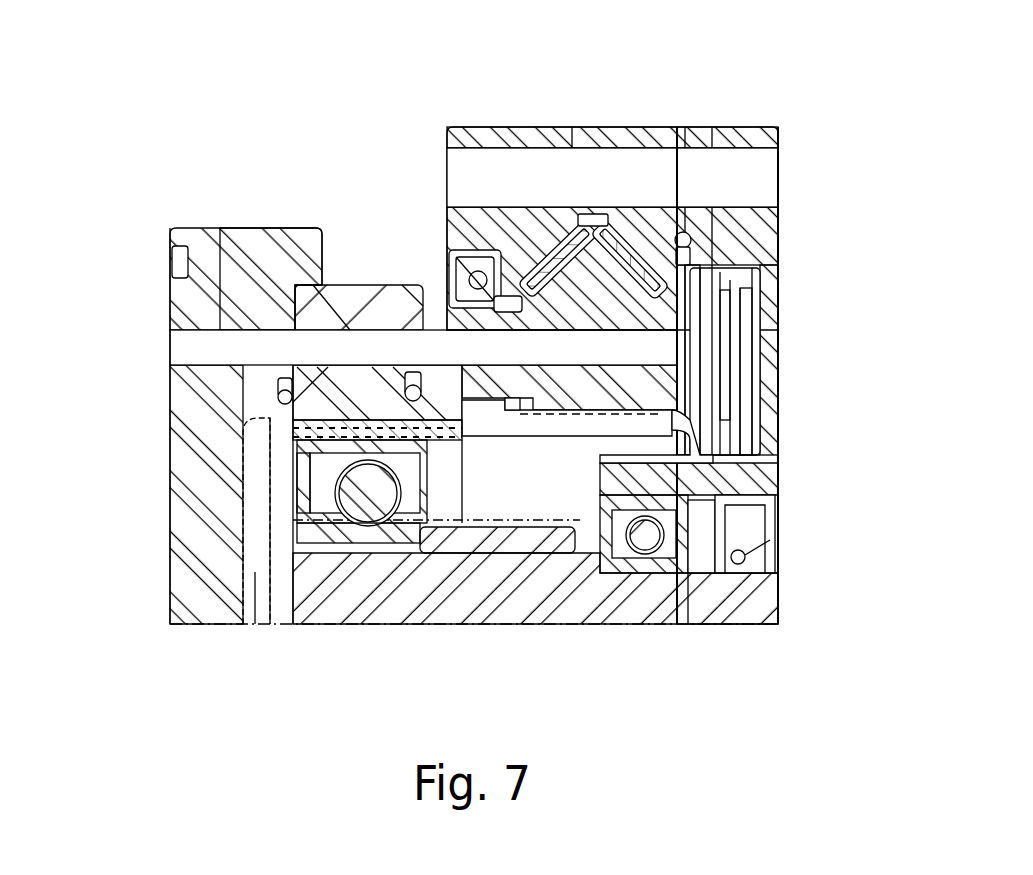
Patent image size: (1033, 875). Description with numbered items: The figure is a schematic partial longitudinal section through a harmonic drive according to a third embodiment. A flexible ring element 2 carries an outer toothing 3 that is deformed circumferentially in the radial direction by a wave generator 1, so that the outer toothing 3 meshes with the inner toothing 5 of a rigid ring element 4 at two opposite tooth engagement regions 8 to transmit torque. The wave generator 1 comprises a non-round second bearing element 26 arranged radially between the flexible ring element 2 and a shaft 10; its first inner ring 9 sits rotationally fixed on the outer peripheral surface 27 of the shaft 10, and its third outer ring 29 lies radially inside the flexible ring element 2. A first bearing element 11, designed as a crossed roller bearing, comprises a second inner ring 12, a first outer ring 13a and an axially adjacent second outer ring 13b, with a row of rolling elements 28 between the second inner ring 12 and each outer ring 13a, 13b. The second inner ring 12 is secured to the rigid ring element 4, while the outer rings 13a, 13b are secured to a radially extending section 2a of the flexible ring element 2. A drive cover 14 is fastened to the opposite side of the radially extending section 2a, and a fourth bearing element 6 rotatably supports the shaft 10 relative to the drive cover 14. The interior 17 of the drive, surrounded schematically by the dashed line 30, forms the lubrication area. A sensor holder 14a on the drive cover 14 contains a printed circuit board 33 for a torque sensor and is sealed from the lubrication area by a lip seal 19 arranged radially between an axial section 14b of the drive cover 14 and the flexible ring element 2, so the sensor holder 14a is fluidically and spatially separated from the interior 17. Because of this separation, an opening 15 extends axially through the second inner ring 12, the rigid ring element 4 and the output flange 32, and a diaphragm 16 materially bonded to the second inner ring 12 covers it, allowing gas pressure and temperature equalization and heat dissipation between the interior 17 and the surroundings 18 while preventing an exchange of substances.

The wave generator 1 is at (345, 550).
The flexible ring element 2 is at (360, 420).
The radially extending section 2a is at (700, 132).
The outer toothing 3 is at (353, 367).
The rigid ring element 4 is at (360, 362).
The inner toothing 5 is at (500, 350).
The fourth bearing element 6 is at (667, 579).
The tooth engagement regions 8 is at (291, 455).
The first inner ring 9 is at (300, 540).
The shaft 10 is at (760, 597).
The first bearing element 11 is at (428, 108).
The second inner ring 12 is at (448, 260).
The first outer ring 13a is at (510, 138).
The second outer ring 13b is at (633, 140).
The drive cover 14 is at (777, 410).
The sensor holder 14a is at (743, 448).
The axial section 14b is at (645, 470).
The opening 15 is at (697, 343).
The diaphragm 16 is at (692, 282).
The interior 17 is at (580, 472).
The surroundings 18 is at (100, 355).
The seal 19 is at (750, 483).
The second bearing element 26 is at (276, 427).
The outer peripheral surface 27 is at (400, 537).
The rolling elements 28 is at (540, 225).
The third outer ring 29 is at (360, 375).
The dashed line 30 is at (497, 555).
The output flange 32 is at (227, 260).
The printed circuit board 33 is at (732, 276).